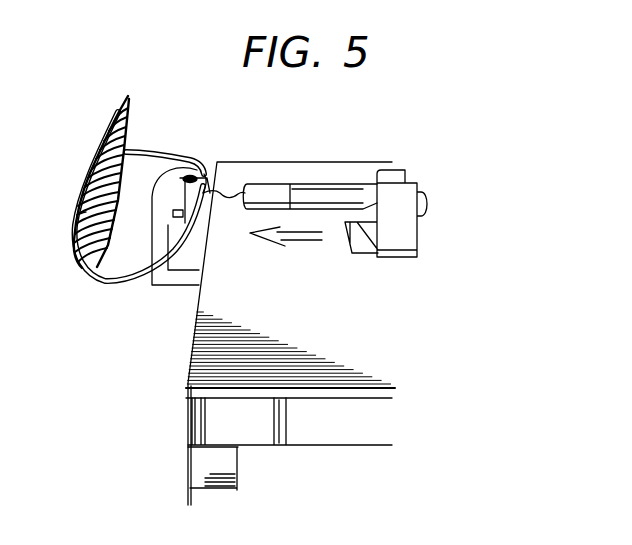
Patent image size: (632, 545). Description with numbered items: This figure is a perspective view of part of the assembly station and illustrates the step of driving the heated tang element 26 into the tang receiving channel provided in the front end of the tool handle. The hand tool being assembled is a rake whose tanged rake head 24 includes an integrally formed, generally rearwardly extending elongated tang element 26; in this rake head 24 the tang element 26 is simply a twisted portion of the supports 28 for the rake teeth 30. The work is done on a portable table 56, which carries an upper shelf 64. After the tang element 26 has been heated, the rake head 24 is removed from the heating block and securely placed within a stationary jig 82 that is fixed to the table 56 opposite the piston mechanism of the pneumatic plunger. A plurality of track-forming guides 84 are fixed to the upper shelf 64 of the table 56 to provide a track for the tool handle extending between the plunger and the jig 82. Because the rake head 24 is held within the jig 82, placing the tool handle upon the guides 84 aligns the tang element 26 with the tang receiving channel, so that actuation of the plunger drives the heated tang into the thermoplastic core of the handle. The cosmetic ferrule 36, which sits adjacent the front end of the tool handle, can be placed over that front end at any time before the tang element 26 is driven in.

The rake head 24 is at (127, 100).
The supports 28 is at (163, 152).
The tang element 26 is at (238, 192).
The cosmetic ferrule 36 is at (282, 193).
The rake teeth 30 is at (80, 214).
The stationary jig 82 is at (170, 290).
The track-forming guides 84 is at (387, 242).
The upper shelf 64 is at (186, 367).
The portable table 56 is at (186, 466).